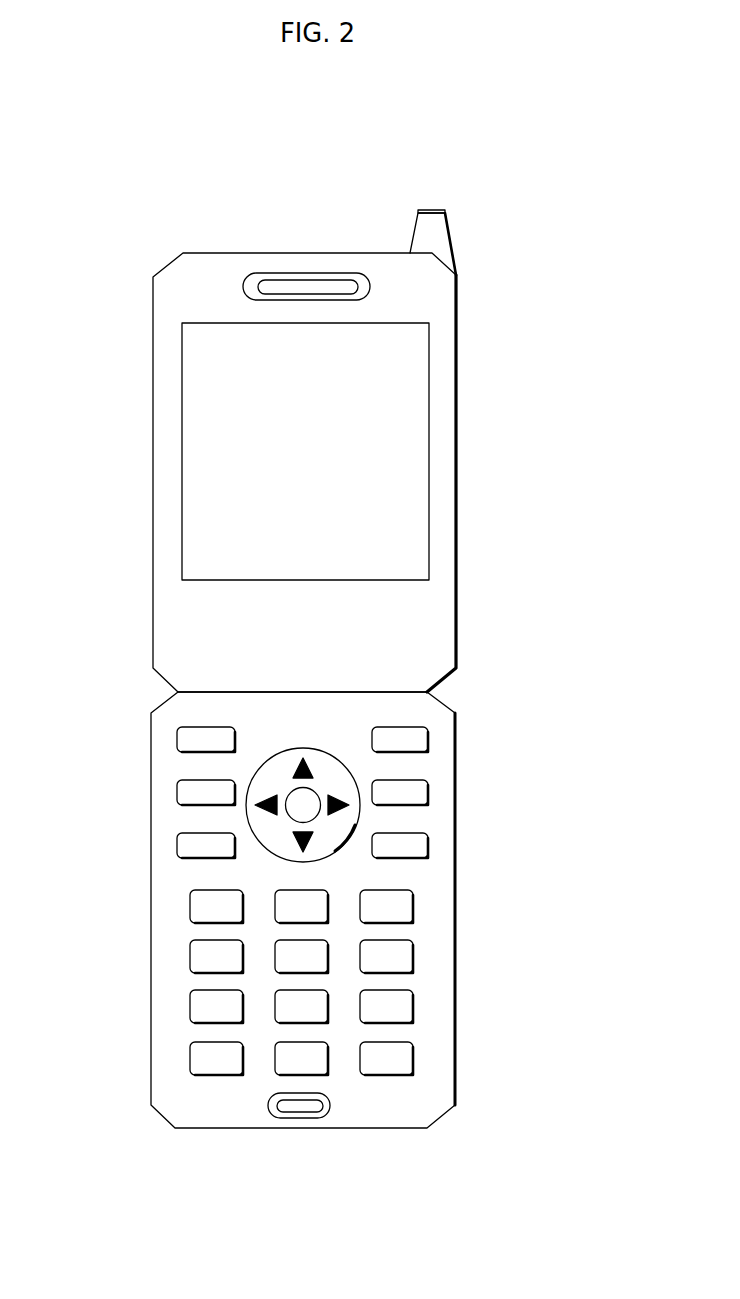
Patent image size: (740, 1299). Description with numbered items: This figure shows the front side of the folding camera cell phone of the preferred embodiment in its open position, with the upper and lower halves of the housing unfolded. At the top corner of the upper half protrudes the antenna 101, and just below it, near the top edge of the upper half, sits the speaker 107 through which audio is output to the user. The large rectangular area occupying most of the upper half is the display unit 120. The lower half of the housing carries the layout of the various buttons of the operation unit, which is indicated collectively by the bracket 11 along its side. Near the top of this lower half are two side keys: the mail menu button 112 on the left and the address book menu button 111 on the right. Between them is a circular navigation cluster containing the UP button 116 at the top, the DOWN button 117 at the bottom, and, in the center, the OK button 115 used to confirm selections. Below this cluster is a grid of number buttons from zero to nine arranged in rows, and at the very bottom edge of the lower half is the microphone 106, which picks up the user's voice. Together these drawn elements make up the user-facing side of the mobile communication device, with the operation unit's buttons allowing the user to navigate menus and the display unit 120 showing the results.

The operation unit (key input section) 11 is at (572, 685).
The antenna 101 is at (435, 207).
The microphone 106 is at (332, 1105).
The speaker 107 is at (290, 287).
The address book menu button 111 is at (410, 738).
The mail menu button 112 is at (190, 739).
The OK button 115 is at (303, 805).
The UP button 116 is at (304, 757).
The DOWN button 117 is at (303, 843).
The display unit 120 is at (403, 437).